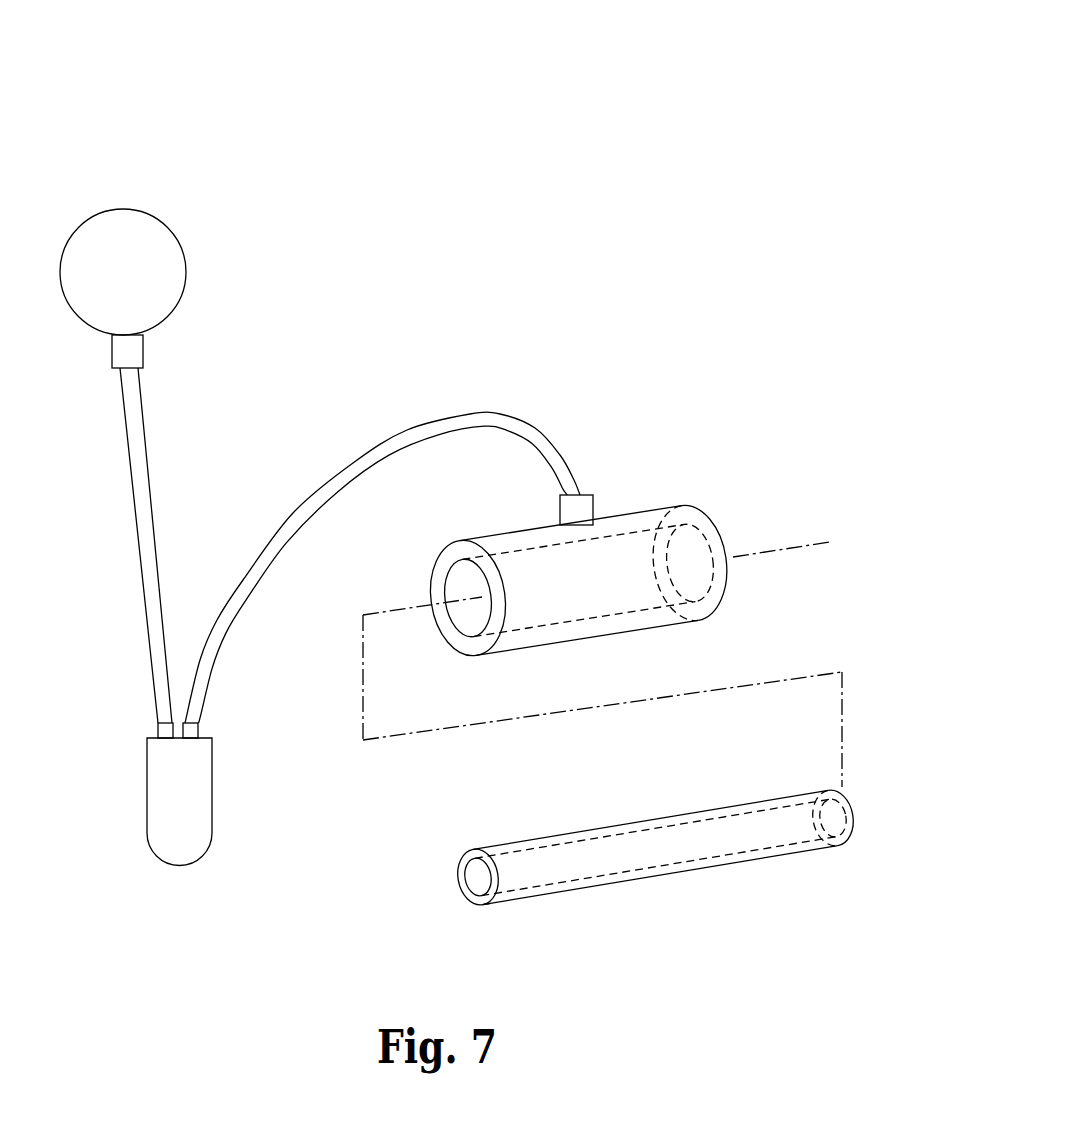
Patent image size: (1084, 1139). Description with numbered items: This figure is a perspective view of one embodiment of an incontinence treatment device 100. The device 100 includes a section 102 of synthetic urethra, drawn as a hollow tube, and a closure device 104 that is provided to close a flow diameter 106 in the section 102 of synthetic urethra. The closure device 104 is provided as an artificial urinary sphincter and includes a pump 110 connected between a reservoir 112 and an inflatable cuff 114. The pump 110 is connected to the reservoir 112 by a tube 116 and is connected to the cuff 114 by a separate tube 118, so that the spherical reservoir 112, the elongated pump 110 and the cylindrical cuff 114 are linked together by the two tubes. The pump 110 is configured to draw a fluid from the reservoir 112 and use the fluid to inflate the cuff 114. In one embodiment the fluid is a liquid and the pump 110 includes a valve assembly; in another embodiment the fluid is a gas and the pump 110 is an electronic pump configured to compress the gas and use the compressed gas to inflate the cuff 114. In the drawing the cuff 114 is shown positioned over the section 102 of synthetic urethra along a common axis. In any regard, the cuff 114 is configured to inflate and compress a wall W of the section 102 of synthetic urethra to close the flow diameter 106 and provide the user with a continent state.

The incontinence treatment device 100 is at (512, 66).
The section of synthetic urethra 102 is at (648, 872).
The closure device 104 is at (316, 362).
The flow diameter 106 is at (472, 878).
The pump 110 is at (167, 818).
The reservoir 112 is at (148, 237).
The inflatable cuff 114 is at (648, 522).
The tube 116 is at (137, 455).
The tube 118 is at (423, 435).
The wall W is at (477, 900).